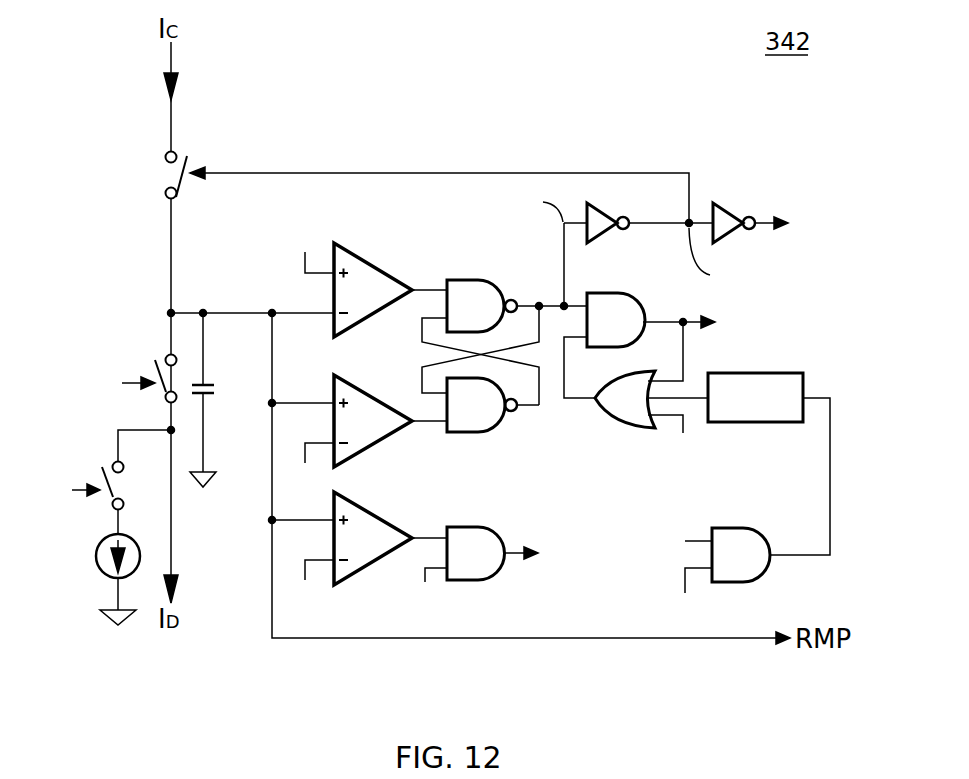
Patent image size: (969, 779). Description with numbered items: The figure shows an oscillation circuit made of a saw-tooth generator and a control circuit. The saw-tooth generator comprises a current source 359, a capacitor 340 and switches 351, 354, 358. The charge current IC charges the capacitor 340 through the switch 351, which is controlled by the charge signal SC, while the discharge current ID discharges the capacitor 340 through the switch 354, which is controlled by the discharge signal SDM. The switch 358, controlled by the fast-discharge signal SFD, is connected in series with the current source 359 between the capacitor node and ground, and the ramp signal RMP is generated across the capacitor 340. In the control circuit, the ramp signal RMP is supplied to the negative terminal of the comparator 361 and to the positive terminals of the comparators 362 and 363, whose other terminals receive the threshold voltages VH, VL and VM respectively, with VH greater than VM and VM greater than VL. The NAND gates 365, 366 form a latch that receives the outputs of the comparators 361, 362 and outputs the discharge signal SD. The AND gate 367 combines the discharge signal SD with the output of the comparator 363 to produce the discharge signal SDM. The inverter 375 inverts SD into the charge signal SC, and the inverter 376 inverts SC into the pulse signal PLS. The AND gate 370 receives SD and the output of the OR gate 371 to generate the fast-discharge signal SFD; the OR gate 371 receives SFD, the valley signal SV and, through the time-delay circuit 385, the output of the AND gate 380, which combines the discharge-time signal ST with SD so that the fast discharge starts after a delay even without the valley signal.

The switch 351 is at (160, 178).
The switch 354 is at (160, 351).
The switch 358 is at (110, 456).
The current source 359 is at (92, 558).
The capacitor 340 is at (216, 390).
The comparator 361 is at (365, 256).
The comparator 362 is at (380, 445).
The comparator 363 is at (385, 518).
The NAND gate 365 is at (463, 280).
The NAND gate 366 is at (465, 434).
The AND gate 367 is at (470, 585).
The AND gate 370 is at (608, 292).
The OR gate 371 is at (620, 432).
The inverter 375 is at (605, 200).
The inverter 376 is at (730, 200).
The AND gate 380 is at (735, 527).
The time-delay circuit 385 is at (763, 371).